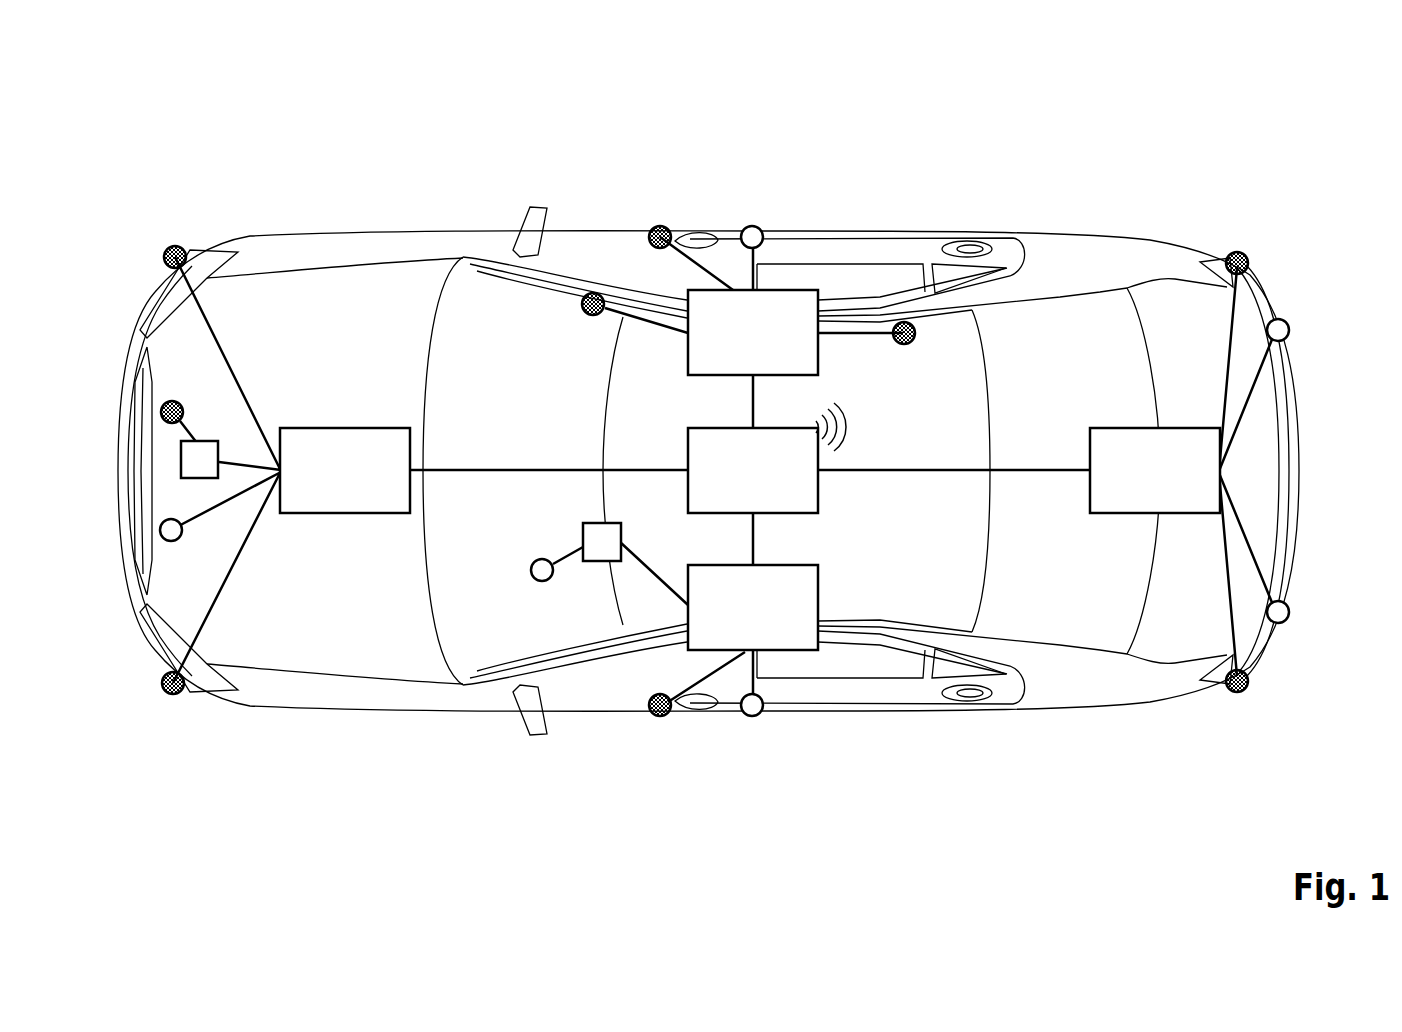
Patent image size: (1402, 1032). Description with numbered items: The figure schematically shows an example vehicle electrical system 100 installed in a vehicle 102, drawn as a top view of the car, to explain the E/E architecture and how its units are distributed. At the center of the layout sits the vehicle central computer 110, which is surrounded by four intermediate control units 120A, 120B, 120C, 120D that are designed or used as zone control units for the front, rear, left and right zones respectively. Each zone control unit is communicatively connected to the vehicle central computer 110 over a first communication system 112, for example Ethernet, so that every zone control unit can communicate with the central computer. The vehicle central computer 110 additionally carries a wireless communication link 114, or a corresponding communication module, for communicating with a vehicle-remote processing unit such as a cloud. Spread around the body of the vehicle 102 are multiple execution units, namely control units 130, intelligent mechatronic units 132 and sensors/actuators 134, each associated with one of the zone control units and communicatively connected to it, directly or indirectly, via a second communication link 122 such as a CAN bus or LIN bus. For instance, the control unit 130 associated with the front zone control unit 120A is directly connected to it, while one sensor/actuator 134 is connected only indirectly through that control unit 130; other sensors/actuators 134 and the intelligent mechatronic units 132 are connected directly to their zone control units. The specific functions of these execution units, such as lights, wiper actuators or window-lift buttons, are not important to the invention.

The vehicle electrical system 100 is at (114, 94).
The vehicle 102 is at (320, 232).
The vehicle central computer 110 is at (778, 488).
The first communication system 112 is at (492, 468).
The wireless communication link 114 is at (848, 432).
The intermediate control unit 120A is at (313, 487).
The intermediate control unit 120B is at (1123, 487).
The intermediate control unit 120C is at (721, 624).
The intermediate control unit 120D is at (721, 350).
The second communication link 122 is at (232, 352).
The control unit 130 is at (181, 462).
The intelligent mechatronic unit 132 is at (159, 531).
The sensor/actuator 134 is at (175, 246).